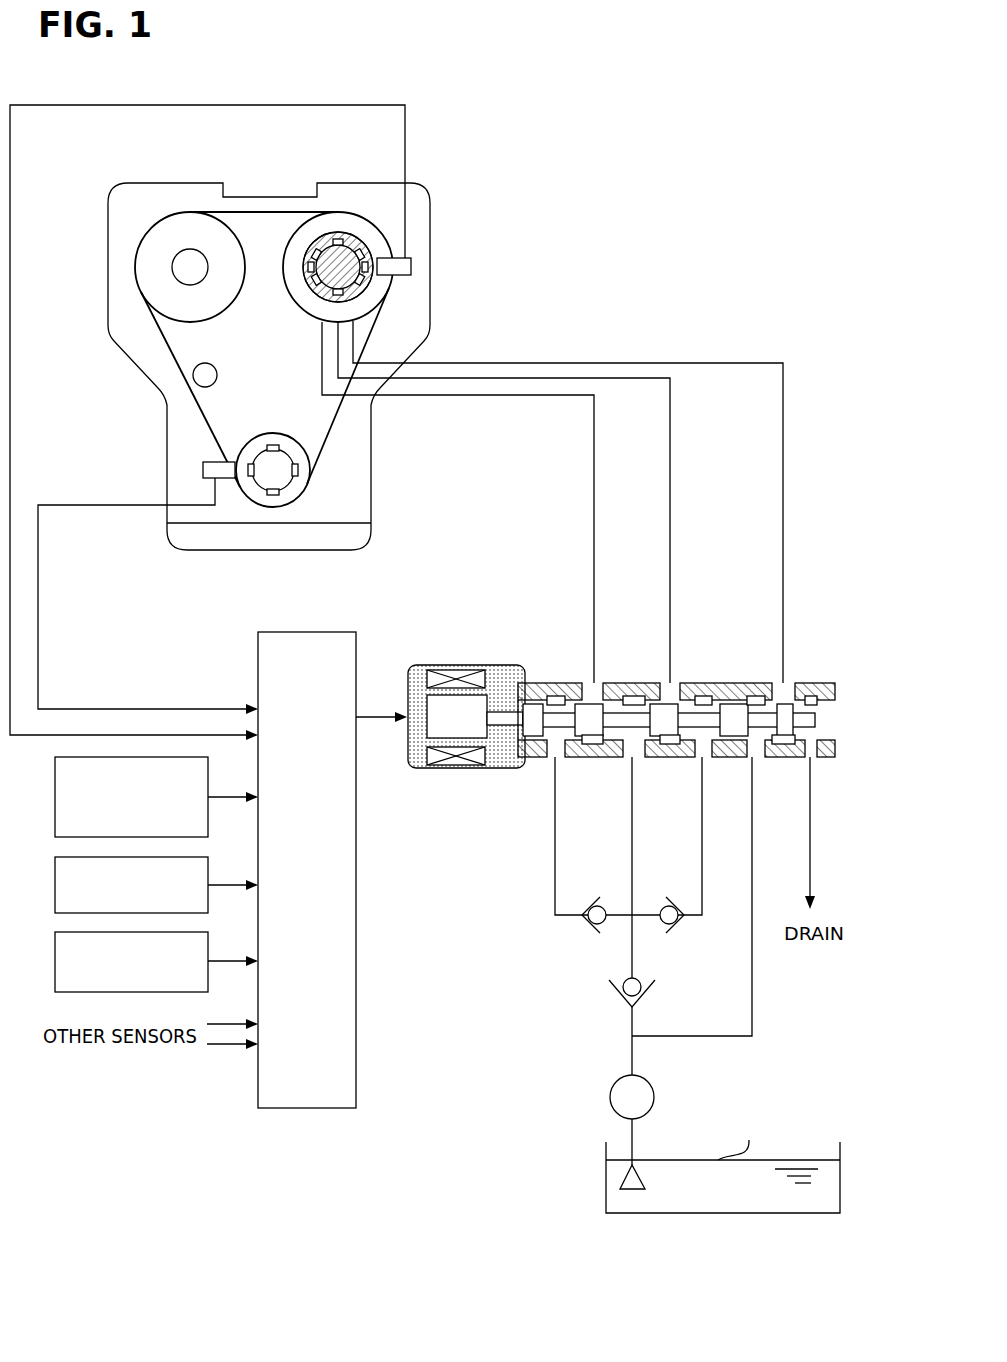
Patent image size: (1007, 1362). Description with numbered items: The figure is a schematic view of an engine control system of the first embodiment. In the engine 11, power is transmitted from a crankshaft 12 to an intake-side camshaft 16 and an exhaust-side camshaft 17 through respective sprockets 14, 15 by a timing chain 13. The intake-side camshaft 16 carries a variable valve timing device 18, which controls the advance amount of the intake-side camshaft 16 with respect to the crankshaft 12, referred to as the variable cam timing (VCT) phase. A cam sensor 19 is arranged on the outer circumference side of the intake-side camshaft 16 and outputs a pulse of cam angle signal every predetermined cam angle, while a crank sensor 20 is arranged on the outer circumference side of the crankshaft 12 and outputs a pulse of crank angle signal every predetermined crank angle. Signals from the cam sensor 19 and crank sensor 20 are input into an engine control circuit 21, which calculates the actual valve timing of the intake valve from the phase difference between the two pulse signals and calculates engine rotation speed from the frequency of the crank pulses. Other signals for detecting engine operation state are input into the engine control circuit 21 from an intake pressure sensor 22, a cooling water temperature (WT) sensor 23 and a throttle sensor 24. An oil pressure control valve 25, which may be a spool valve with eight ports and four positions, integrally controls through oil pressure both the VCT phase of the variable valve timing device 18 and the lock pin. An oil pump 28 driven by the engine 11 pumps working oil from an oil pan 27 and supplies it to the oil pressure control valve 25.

The engine 11 is at (264, 190).
The crankshaft 12 is at (281, 478).
The timing chain 13 is at (330, 437).
The sprocket 14 is at (350, 225).
The sprocket 15 is at (162, 242).
The intake-side camshaft 16 is at (422, 177).
The exhaust-side camshaft 17 is at (190, 268).
The variable valve timing device 18 is at (366, 227).
The cam sensor 19 is at (412, 268).
The crank sensor 20 is at (203, 468).
The engine control circuit 21 is at (310, 1108).
The intake pressure sensor 22 is at (82, 757).
The cooling water temperature (WT) sensor 23 is at (82, 857).
The throttle sensor 24 is at (82, 932).
The oil pressure control valve 25 is at (807, 683).
The oil pan 27 is at (606, 1180).
The oil pump 28 is at (610, 1094).